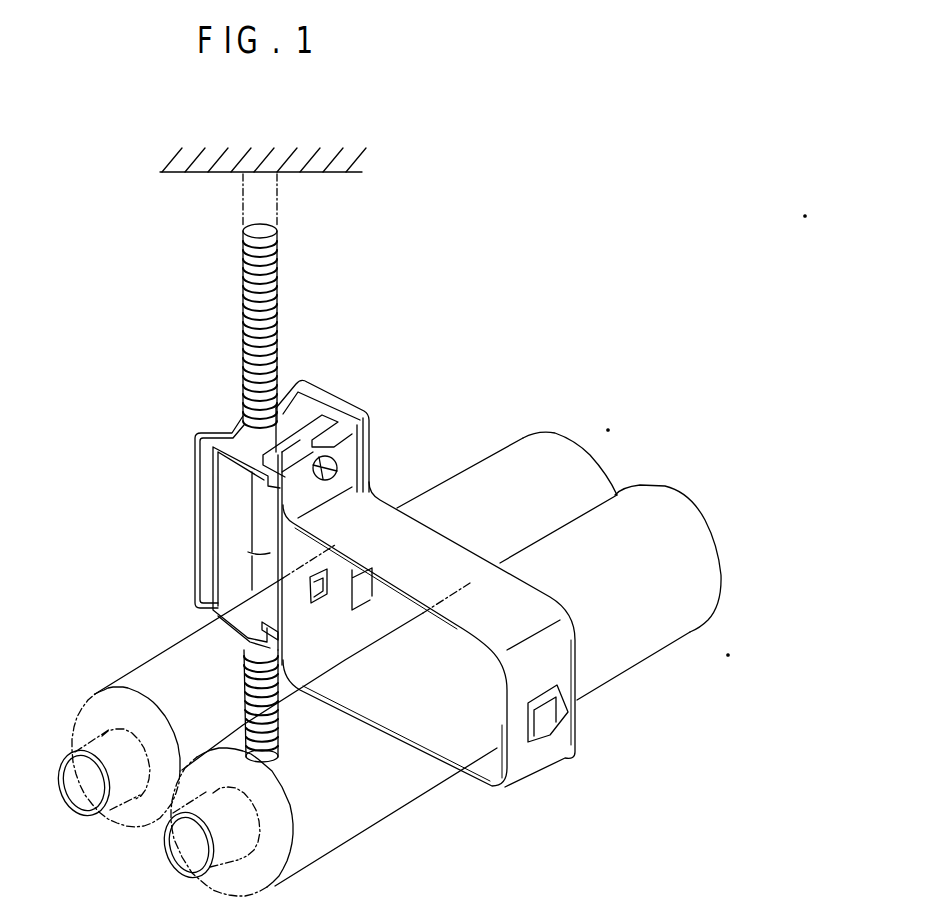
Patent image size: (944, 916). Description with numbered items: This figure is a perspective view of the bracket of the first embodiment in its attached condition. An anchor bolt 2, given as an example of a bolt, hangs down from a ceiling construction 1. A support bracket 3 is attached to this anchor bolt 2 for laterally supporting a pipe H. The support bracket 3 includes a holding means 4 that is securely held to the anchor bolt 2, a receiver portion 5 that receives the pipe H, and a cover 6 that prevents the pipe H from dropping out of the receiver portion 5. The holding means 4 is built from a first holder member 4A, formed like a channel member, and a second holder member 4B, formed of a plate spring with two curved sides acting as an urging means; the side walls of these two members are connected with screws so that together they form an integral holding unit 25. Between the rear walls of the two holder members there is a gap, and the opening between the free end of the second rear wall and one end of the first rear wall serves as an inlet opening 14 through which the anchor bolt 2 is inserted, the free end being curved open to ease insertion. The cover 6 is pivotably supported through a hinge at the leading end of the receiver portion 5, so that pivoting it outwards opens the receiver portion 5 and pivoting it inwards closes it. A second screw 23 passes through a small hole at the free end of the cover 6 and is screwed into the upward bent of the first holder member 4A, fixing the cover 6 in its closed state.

The ceiling construction 1 is at (183, 173).
The anchor bolt 2 is at (243, 278).
The support bracket 3 is at (377, 485).
The holding means 4 is at (172, 532).
The first holder member 4A is at (206, 526).
The second holder member 4B is at (190, 476).
The receiver portion 5 is at (384, 758).
The cover 6 is at (540, 562).
The inlet opening 14 is at (192, 569).
The second screw 23 is at (337, 465).
The integral holding unit 25 is at (353, 384).
The pipe H is at (170, 860).